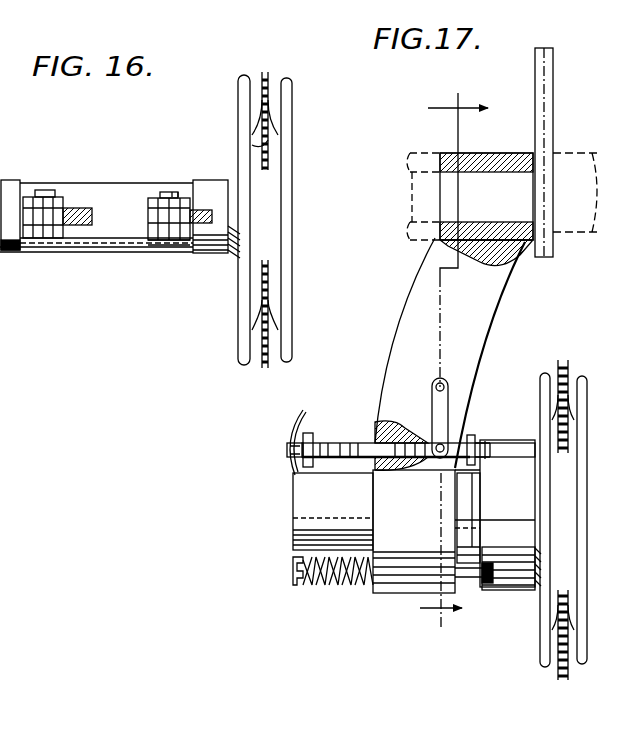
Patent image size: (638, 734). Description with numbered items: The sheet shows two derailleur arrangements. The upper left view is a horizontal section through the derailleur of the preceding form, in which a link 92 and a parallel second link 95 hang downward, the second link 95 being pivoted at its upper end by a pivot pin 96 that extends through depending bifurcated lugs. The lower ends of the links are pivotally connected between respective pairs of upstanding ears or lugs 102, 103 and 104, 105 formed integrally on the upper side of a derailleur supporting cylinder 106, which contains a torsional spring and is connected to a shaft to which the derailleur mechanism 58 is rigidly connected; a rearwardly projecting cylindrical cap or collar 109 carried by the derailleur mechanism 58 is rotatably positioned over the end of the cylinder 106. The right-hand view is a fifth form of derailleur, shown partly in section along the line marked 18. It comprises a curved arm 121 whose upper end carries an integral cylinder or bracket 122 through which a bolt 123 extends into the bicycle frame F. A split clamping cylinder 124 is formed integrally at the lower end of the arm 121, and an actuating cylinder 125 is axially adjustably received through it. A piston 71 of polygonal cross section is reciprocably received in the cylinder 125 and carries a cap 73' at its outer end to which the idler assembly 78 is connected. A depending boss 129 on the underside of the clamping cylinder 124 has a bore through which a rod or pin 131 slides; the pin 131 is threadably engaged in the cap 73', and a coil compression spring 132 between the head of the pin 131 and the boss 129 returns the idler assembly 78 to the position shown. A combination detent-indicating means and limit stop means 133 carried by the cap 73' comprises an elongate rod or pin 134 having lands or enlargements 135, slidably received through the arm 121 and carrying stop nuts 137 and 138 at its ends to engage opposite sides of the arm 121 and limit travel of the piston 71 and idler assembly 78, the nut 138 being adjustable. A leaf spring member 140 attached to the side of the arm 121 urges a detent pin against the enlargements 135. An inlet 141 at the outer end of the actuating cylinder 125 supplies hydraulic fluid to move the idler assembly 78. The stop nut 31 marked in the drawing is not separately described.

In FIG. 16, the derailleur mechanism 58 is at (293, 206).
In FIG. 17, the idler assembly 78 is at (594, 471).
In FIG. 16, the link 92 is at (88, 252).
In FIG. 16, the second link 95 is at (208, 210).
In FIG. 16, the pivot pin 96 is at (172, 197).
In FIG. 16, the upstanding ear 102 is at (64, 196).
In FIG. 16, the upstanding ear 103 is at (63, 250).
In FIG. 16, the upstanding ear 104 is at (160, 197).
In FIG. 16, the upstanding ear 105 is at (155, 244).
In FIG. 16, the derailleur supporting cylinder 106 is at (105, 183).
In FIG. 16, the cylindrical cap or collar 109 is at (212, 255).
In FIG. 17, the section line 18 is at (454, 358).
In FIG. 17, the frame F is at (553, 140).
In FIG. 17, the curved arm 121 is at (485, 318).
In FIG. 17, the cylinder or bracket 122 is at (457, 158).
In FIG. 17, the bolt 123 is at (410, 196).
In FIG. 17, the split clamping cylinder 124 is at (375, 508).
In FIG. 17, the actuating cylinder 125 is at (292, 515).
In FIG. 17, the depending boss 129 is at (395, 590).
In FIG. 17, the rod or pin 131 is at (468, 580).
In FIG. 17, the coil compression spring 132 is at (330, 590).
In FIG. 17, the combination detent-indicating means and limit stop means 133 is at (358, 425).
In FIG. 17, the elongate rod or pin 134 is at (345, 440).
In FIG. 17, the lands or enlargements 135 is at (410, 430).
In FIG. 17, the stop nut 137 is at (466, 438).
In FIG. 17, the stop nut 138 is at (295, 433).
In FIG. 17, the leaf spring member 140 is at (432, 408).
In FIG. 17, the inlet 141 is at (290, 470).
In FIG. 17, the bolt 31 is at (303, 420).
In FIG. 17, the piston 71 is at (478, 490).
In FIG. 17, the cap 73' is at (511, 594).